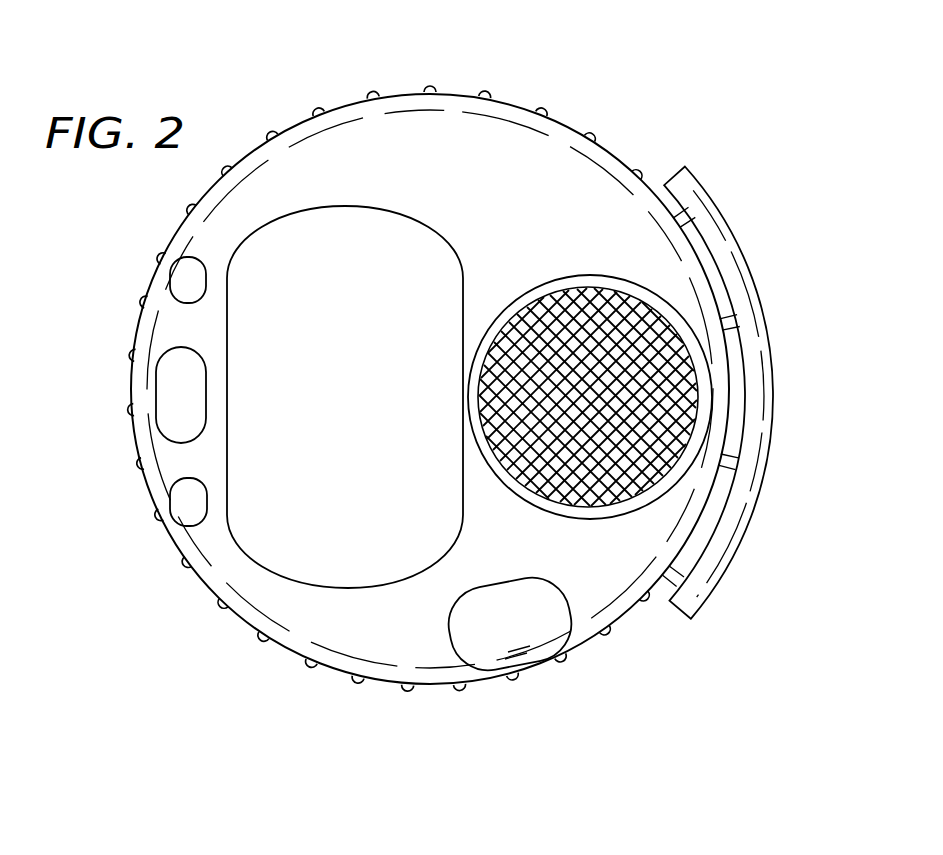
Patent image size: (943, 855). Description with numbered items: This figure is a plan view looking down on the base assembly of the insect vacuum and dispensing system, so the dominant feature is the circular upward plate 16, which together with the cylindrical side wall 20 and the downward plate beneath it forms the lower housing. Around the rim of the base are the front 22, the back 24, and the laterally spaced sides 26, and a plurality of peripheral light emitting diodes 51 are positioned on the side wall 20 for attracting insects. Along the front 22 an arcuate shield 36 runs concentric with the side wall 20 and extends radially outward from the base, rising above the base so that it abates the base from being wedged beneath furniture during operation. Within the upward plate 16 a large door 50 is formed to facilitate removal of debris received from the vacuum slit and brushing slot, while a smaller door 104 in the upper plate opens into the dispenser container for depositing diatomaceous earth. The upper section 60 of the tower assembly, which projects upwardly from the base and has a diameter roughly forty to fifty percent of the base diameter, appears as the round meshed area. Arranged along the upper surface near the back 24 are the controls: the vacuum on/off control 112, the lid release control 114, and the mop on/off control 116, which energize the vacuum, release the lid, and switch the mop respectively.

The upward plate 16 is at (446, 188).
The side wall 20 is at (446, 92).
The front 22 is at (732, 374).
The back 24 is at (128, 394).
The laterally spaced sides 26 is at (410, 90).
The shield 36 is at (776, 384).
The door 50 is at (360, 364).
The peripheral light emitting diodes 51 is at (370, 97).
The upper section 60 is at (598, 282).
The door 104 is at (522, 635).
The vacuum on/off control 112 is at (188, 282).
The lid release control 114 is at (178, 378).
The mop on/off control 116 is at (192, 503).